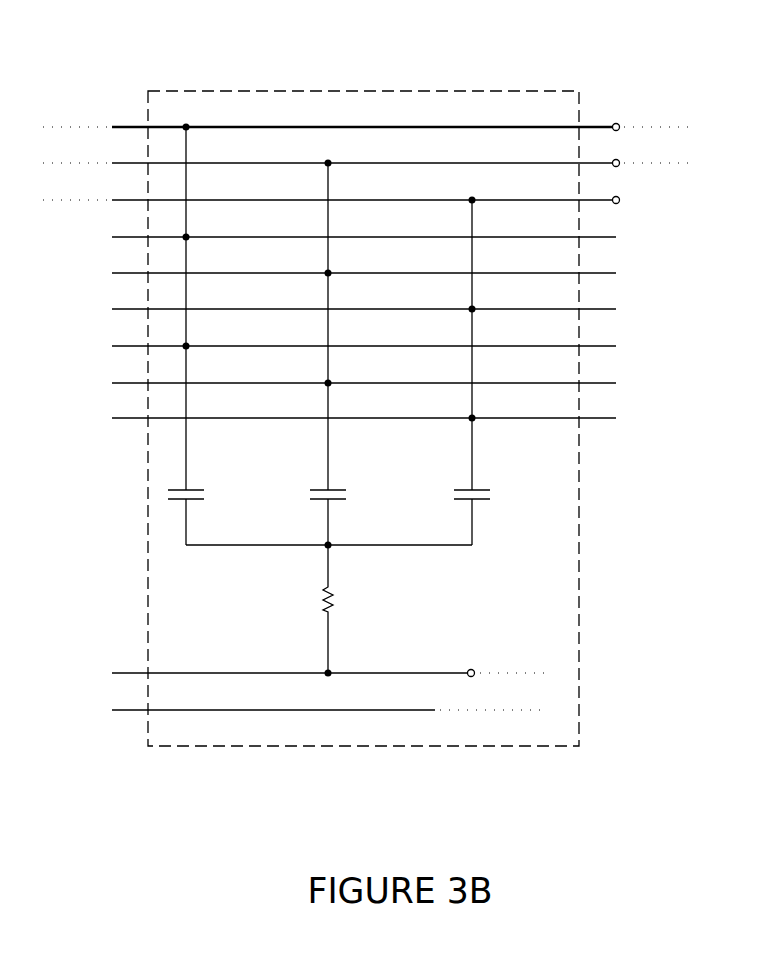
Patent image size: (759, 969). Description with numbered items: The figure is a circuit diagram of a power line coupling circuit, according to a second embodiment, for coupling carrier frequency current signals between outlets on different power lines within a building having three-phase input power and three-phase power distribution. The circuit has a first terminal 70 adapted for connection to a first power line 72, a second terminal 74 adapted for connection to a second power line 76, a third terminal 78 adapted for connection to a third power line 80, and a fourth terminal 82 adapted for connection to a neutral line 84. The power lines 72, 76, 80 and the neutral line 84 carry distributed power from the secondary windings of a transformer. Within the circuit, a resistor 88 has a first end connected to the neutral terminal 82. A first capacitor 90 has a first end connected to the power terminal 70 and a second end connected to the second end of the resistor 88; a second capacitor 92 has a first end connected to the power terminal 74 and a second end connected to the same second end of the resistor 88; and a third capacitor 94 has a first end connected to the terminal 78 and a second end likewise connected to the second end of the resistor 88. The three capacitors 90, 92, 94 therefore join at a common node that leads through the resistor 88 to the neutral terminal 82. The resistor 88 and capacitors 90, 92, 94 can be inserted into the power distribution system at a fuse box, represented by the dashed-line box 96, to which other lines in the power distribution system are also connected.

The first terminal 70 is at (616, 115).
The first power line 72 is at (465, 127).
The second terminal 74 is at (616, 152).
The second power line 76 is at (475, 163).
The third terminal 78 is at (616, 189).
The third power line 80 is at (517, 200).
The fourth terminal 82 is at (472, 663).
The neutral line 84 is at (375, 663).
The resistor 88 is at (338, 598).
The first capacitor 90 is at (203, 482).
The second capacitor 92 is at (346, 482).
The third capacitor 94 is at (490, 482).
The fuse box 96 is at (265, 746).